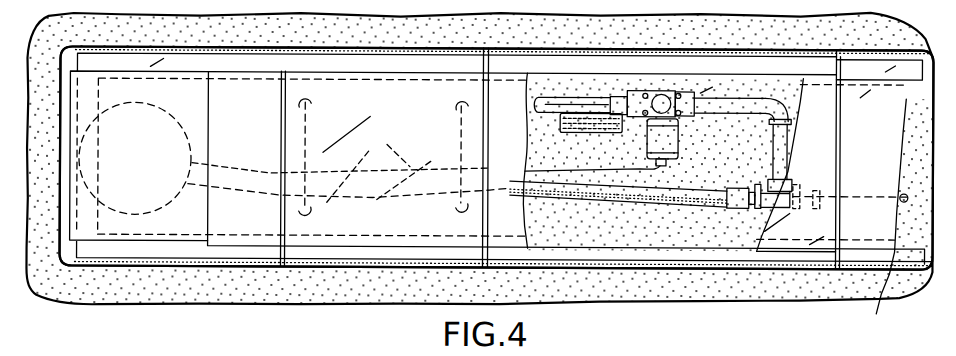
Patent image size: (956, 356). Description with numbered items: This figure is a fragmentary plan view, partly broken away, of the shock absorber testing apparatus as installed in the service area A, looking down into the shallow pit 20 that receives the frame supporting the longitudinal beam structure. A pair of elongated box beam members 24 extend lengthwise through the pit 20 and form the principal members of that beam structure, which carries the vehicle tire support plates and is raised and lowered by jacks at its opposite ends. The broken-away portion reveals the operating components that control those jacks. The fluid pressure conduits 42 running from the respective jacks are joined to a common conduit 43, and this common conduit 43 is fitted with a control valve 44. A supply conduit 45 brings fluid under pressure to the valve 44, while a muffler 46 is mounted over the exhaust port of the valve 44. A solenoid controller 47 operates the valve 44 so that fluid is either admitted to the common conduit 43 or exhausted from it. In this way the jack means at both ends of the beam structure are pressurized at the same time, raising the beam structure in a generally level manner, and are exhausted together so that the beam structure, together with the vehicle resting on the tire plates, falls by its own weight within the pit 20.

The pit 20 is at (173, 264).
The box beam member 24 is at (876, 62).
The fluid pressure conduit 42 is at (906, 196).
The common conduit 43 is at (787, 141).
The control valve 44 is at (684, 105).
The supply conduit 45 is at (545, 96).
The muffler 46 is at (579, 133).
The solenoid controller 47 is at (682, 161).
The service area A is at (742, 284).